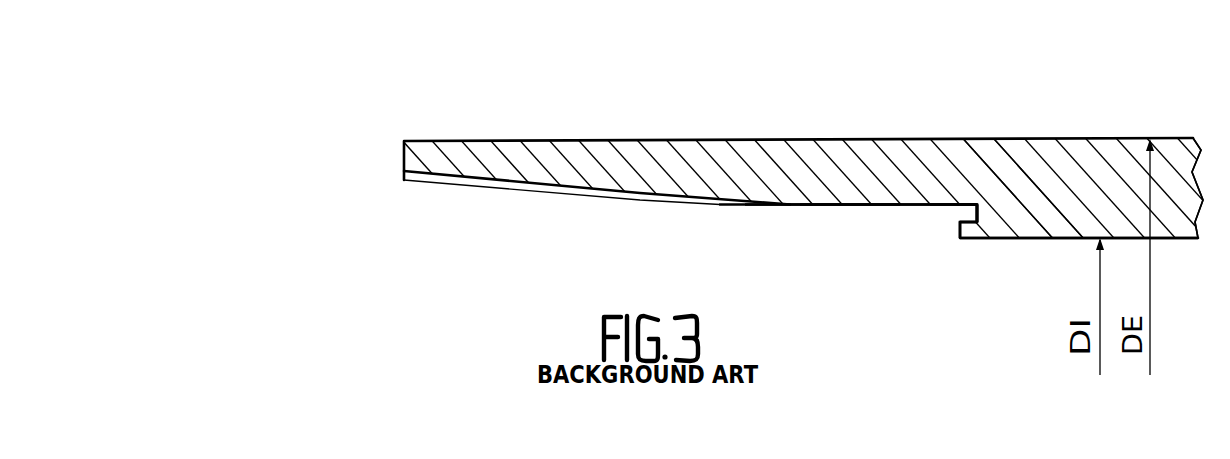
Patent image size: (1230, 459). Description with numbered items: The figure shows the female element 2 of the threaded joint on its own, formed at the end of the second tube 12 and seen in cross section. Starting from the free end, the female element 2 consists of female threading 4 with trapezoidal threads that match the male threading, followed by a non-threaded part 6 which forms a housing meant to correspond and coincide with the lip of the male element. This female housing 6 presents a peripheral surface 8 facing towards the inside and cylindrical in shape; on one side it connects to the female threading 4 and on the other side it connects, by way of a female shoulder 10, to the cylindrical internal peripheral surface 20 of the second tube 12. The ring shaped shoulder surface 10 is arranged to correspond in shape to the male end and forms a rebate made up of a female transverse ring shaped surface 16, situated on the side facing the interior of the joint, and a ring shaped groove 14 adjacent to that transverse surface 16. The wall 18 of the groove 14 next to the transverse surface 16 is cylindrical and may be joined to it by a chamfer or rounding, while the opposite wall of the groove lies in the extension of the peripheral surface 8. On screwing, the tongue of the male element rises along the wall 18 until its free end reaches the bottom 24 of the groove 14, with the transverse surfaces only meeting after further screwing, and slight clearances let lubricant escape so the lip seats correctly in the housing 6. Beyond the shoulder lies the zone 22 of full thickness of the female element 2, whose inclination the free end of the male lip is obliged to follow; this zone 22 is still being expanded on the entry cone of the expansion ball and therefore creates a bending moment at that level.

The female element 2 is at (798, 133).
The female threading 4 is at (562, 188).
The non-threaded part 6 is at (884, 216).
The peripheral surface 8 is at (850, 207).
The female shoulder 10 is at (939, 231).
The second tube 12 is at (1110, 150).
The ring shaped groove 14 is at (963, 203).
The female transverse ring shaped surface 16 is at (959, 229).
The wall of the groove 18 is at (922, 137).
The cylindrical internal peripheral surface 20 is at (1017, 239).
The zone of full thickness 22 is at (1017, 175).
The bottom of the groove 24 is at (975, 212).